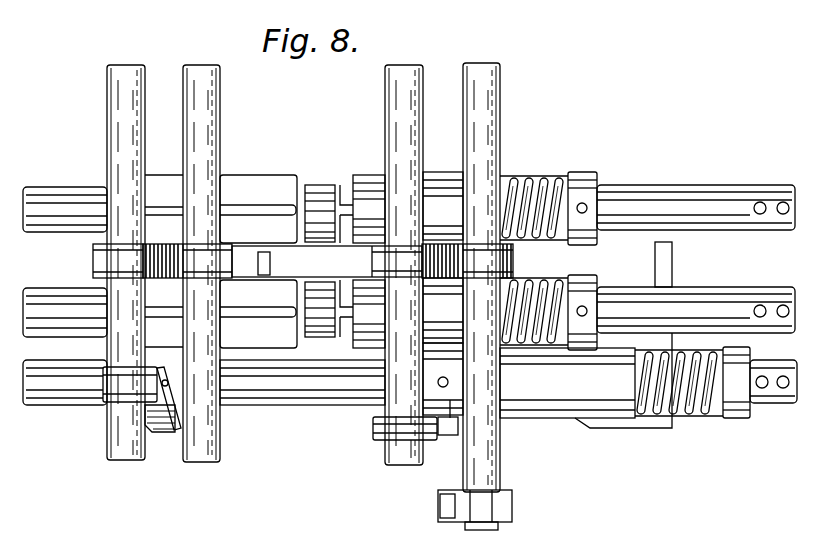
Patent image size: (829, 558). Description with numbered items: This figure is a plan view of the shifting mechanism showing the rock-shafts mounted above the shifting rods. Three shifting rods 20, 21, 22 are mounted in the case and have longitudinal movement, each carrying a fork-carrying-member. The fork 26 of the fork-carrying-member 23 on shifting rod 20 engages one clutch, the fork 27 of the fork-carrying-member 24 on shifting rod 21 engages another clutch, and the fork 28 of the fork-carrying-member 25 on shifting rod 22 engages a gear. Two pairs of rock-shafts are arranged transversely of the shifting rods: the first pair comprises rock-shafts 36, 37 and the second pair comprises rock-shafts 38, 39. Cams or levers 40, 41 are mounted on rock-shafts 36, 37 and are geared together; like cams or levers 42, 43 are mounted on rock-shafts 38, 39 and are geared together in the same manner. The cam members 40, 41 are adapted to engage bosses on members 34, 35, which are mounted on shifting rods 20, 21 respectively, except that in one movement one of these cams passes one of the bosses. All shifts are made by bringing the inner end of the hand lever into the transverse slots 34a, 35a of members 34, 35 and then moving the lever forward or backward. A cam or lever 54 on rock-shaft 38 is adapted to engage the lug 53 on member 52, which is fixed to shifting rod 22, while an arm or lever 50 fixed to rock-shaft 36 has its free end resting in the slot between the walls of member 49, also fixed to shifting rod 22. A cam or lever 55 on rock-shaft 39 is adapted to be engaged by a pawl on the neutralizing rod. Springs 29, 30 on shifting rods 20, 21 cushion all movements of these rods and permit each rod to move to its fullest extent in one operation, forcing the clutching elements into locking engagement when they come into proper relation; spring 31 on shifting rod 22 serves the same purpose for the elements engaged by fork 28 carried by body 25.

The shifting rod 20 is at (665, 190).
The shifting rod 21 is at (643, 300).
The shifting rod 22 is at (255, 405).
The fork-carrying-member 23 is at (443, 206).
The fork-carrying-member 24 is at (443, 310).
The fork-carrying-member 25 is at (529, 380).
The fork 26 is at (508, 180).
The fork 27 is at (270, 268).
The fork 28 is at (672, 253).
The spring 29 is at (540, 178).
The spring 30 is at (540, 284).
The spring 31 is at (690, 358).
The member 34 is at (249, 209).
The transverse slot 34a is at (318, 185).
The member 35 is at (249, 314).
The transverse slot 35a is at (320, 292).
The rock-shaft 36 is at (125, 460).
The rock-shaft 37 is at (200, 462).
The rock-shaft 38 is at (400, 465).
The rock-shaft 39 is at (483, 530).
The cam or lever 40 is at (118, 261).
The cam or lever 41 is at (187, 261).
The cam or lever 42 is at (327, 261).
The cam or lever 43 is at (467, 261).
The member 49 is at (169, 389).
The arm or lever 50 is at (120, 385).
The member 52 is at (450, 435).
The lug 53 is at (455, 436).
The cam or lever 54 is at (375, 436).
The cam or lever 55 is at (514, 498).